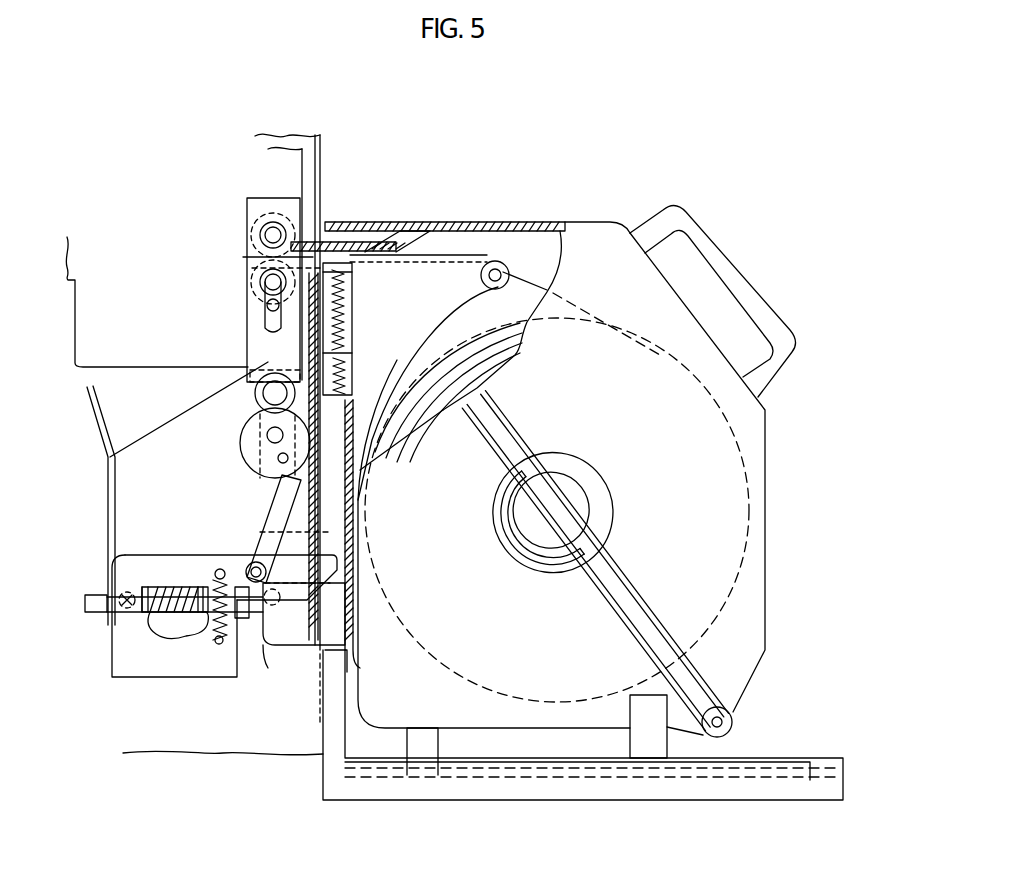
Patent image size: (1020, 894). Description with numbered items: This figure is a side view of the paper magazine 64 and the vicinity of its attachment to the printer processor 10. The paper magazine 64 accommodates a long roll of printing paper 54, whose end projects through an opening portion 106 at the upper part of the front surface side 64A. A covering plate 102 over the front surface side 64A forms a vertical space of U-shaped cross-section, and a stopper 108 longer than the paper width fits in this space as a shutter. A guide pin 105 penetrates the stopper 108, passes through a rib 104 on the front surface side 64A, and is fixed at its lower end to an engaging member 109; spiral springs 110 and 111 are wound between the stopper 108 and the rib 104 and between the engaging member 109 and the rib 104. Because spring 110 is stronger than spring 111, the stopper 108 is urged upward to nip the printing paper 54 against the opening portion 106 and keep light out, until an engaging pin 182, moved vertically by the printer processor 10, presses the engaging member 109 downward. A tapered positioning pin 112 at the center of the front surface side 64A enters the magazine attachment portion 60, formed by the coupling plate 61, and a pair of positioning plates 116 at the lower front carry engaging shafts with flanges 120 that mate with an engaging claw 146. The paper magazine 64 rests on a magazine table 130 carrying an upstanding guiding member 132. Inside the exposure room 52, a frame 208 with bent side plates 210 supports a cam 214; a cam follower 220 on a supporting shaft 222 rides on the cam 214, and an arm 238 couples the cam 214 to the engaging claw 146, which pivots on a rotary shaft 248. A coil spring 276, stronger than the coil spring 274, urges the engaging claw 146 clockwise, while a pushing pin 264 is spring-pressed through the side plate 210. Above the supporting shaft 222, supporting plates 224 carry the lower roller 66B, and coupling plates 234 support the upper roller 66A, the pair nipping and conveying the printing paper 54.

The printer processor 10 is at (140, 226).
The supporting plate 224 is at (114, 331).
The exposure room 52 is at (135, 416).
The coupling plate 234 is at (257, 320).
The upper roller 66A is at (253, 198).
The lower side roller 66B is at (247, 274).
The opening portion 106 is at (360, 233).
The covering plate 102 is at (328, 242).
The printing paper 54 is at (438, 258).
The stopper 108 is at (354, 278).
The spiral spring 110 is at (348, 314).
The spiral spring 111 is at (345, 358).
The engaging member 109 is at (353, 455).
The paper magazine 64 is at (630, 212).
The coupling plate 61 is at (349, 700).
The front surface side 64A is at (320, 688).
The guide pin 105 is at (360, 382).
The rib 104 is at (430, 324).
The engaging pin 182 is at (350, 405).
The positioning pin 112 is at (360, 475).
The coil spring 274 is at (330, 532).
The supporting shaft 222 is at (254, 385).
The cam follower 220 is at (240, 440).
The cam 214 is at (242, 457).
The arm 238 is at (275, 525).
The engaging claw 146 is at (162, 568).
The positioning plate 116 is at (323, 636).
The flange 120 is at (268, 652).
The frame 208 is at (100, 520).
The rotary shaft 248 is at (113, 602).
The pushing pin 264 is at (98, 598).
The coil spring 276 is at (209, 628).
The side plate 210 is at (143, 672).
The magazine attachment portion 60 is at (330, 722).
The magazine table 130 is at (757, 760).
The guiding member 132 is at (838, 760).